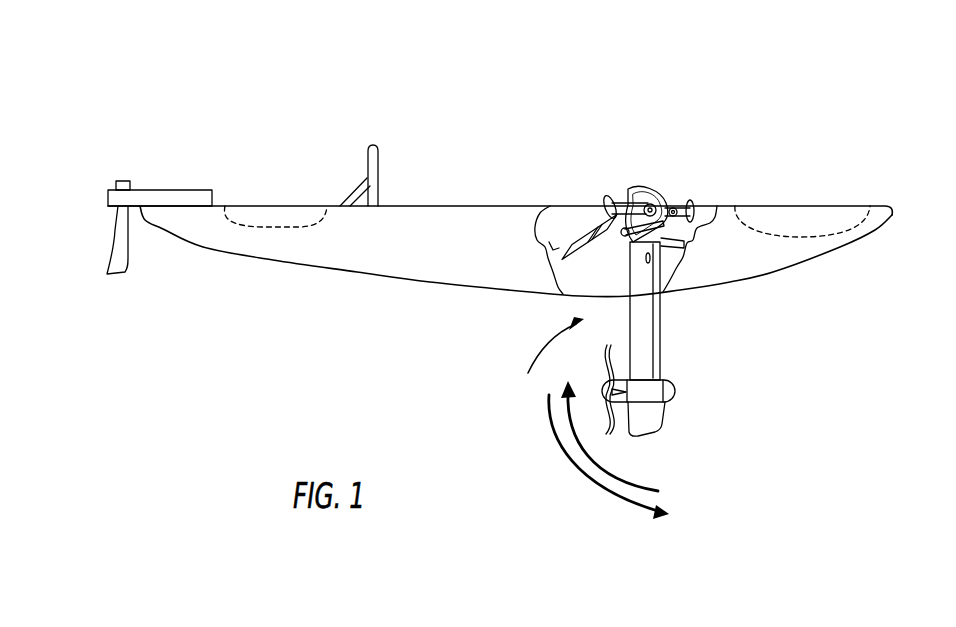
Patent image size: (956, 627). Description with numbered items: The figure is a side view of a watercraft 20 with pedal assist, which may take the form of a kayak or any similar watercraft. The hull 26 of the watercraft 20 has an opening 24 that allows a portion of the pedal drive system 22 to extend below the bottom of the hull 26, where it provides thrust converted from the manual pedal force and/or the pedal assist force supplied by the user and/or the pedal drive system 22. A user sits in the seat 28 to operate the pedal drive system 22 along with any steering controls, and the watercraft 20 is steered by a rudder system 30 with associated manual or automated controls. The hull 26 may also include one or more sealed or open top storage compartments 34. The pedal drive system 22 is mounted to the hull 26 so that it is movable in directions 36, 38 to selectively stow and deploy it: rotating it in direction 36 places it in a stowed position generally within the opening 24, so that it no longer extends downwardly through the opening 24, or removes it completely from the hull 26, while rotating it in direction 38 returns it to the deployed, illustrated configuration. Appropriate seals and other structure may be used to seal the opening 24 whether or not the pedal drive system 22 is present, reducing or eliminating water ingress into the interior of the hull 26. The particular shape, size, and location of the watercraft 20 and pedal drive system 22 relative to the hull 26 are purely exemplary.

The watercraft 20 is at (306, 92).
The pedal drive system 22 is at (669, 144).
The opening 24 is at (530, 372).
The hull 26 is at (357, 263).
The seat 28 is at (372, 157).
The rudder system 30 is at (84, 210).
The storage compartments 34 is at (258, 212).
The direction 36 is at (617, 477).
The direction 38 is at (595, 493).